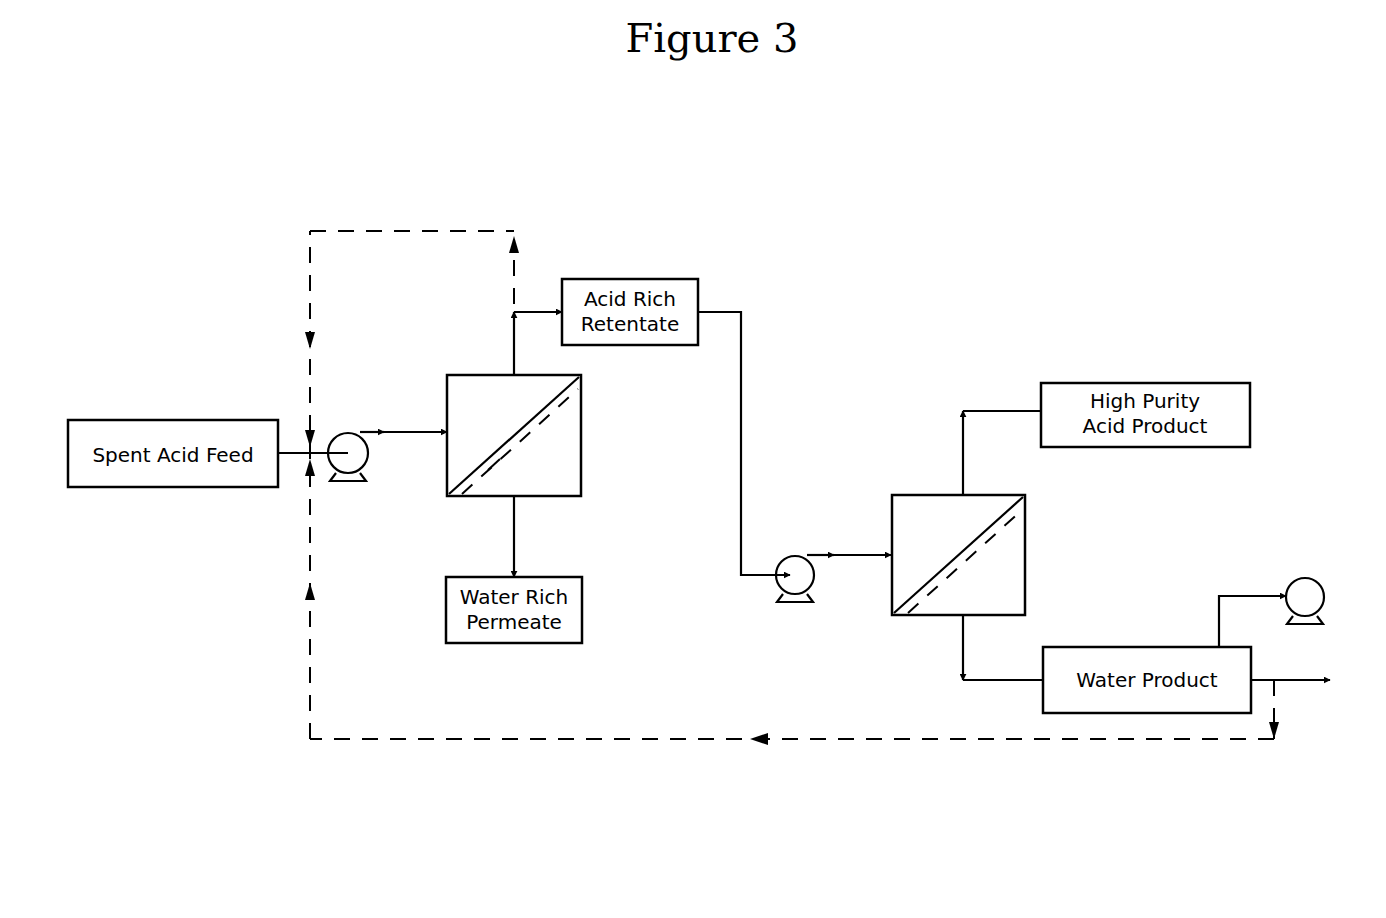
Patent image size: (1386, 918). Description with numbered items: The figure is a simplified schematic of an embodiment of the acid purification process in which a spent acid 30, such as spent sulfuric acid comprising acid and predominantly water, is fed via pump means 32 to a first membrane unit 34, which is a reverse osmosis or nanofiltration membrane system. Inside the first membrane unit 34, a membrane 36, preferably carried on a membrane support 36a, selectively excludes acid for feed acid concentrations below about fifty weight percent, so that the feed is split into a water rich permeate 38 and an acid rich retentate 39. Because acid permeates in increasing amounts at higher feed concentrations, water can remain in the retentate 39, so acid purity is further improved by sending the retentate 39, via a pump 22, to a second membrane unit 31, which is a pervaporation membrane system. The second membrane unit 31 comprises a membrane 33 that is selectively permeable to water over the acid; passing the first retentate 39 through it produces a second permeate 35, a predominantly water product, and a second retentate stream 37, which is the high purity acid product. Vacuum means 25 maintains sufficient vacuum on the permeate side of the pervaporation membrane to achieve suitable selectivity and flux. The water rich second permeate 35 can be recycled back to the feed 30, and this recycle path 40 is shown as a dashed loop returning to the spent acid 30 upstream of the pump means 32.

The pump 22 is at (833, 609).
The vacuum means 25 is at (1302, 594).
The spent acid 30 is at (313, 493).
The second membrane unit 31 is at (999, 555).
The pump means 32 is at (387, 464).
The membrane 33 is at (991, 562).
The first membrane unit 34 is at (549, 435).
The second permeate 35 is at (1003, 647).
The membrane 36 is at (520, 441).
The membrane support 36a is at (526, 477).
The second retentate stream 37 is at (1002, 453).
The water rich permeate stream 38 is at (552, 536).
The retentate 39 is at (552, 313).
The recycle loop 40 is at (792, 464).